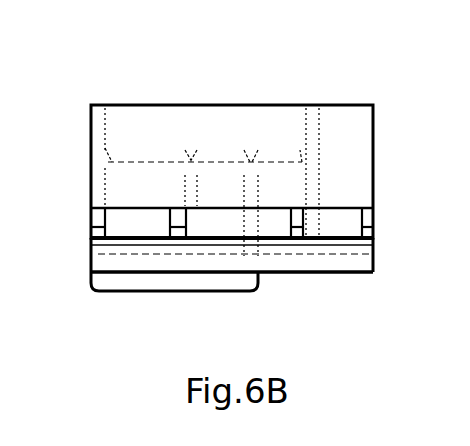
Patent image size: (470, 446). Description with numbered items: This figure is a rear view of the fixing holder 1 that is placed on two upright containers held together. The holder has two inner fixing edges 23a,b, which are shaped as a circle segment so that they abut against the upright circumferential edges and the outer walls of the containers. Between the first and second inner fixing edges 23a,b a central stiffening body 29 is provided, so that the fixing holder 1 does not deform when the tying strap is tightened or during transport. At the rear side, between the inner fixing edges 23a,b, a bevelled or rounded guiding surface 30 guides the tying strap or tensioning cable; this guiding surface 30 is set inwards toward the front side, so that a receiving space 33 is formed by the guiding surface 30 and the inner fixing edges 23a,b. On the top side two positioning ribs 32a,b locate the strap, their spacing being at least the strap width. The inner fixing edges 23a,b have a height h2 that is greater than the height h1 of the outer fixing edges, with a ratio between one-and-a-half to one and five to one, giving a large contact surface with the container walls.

The fixing holder 1 is at (218, 174).
The inner fixing edges 23a,b is at (148, 105).
The central stiffening body 29 is at (258, 162).
The receiving space 33 is at (345, 160).
The guiding surface 30 is at (318, 228).
The positioning ribs 32a,b is at (250, 281).
The height of the outer fixing edges h1 is at (73, 212).
The height of the inner fixing edges h2 is at (402, 110).